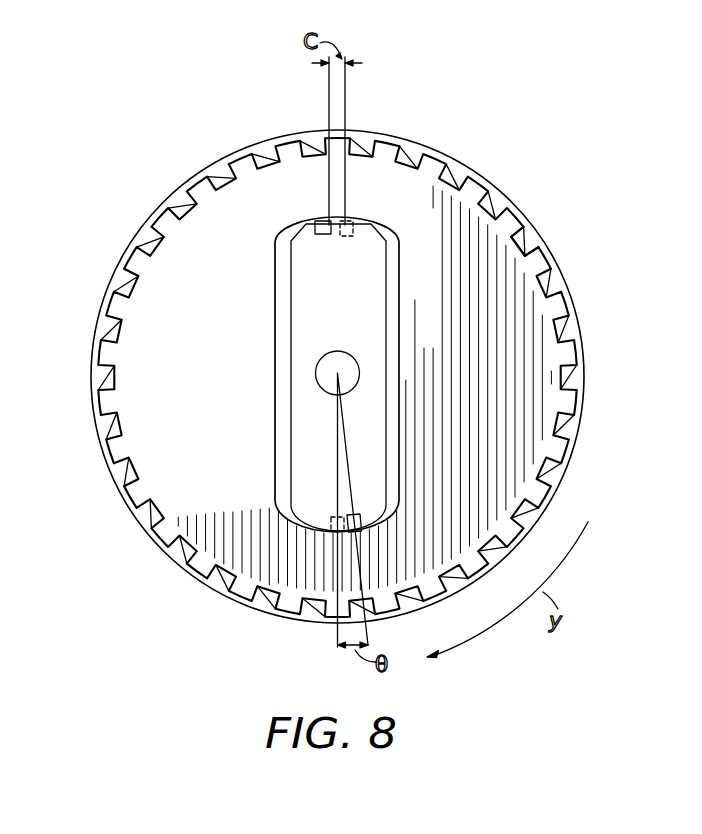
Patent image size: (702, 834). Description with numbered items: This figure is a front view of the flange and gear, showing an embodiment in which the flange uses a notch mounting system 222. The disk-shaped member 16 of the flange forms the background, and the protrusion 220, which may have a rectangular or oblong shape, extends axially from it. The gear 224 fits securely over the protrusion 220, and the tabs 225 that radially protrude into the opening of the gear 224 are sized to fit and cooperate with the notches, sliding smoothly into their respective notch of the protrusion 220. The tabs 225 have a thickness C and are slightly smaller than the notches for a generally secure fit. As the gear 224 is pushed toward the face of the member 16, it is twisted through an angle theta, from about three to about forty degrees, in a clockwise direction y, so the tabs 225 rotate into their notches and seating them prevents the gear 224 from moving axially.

The member 16 is at (495, 199).
The protrusion 220 is at (290, 340).
The notch mounting system 222 is at (323, 237).
The gear 224 is at (522, 263).
The tabs 225 is at (353, 233).